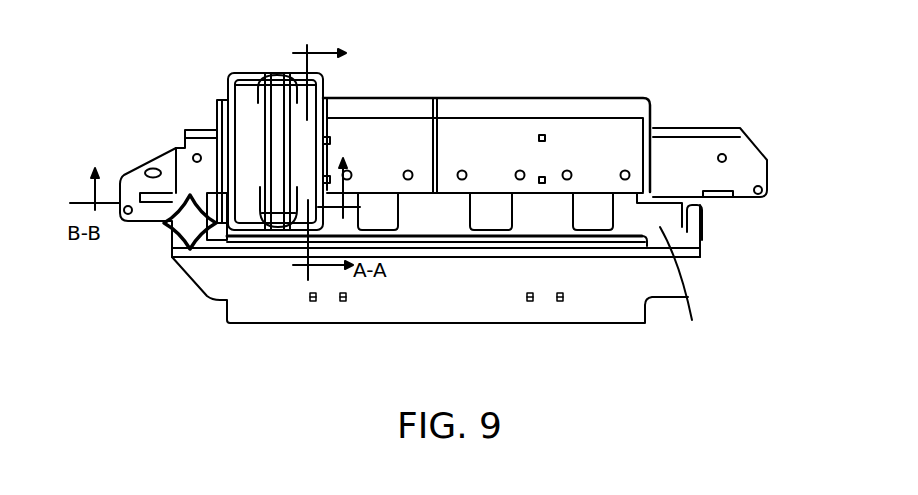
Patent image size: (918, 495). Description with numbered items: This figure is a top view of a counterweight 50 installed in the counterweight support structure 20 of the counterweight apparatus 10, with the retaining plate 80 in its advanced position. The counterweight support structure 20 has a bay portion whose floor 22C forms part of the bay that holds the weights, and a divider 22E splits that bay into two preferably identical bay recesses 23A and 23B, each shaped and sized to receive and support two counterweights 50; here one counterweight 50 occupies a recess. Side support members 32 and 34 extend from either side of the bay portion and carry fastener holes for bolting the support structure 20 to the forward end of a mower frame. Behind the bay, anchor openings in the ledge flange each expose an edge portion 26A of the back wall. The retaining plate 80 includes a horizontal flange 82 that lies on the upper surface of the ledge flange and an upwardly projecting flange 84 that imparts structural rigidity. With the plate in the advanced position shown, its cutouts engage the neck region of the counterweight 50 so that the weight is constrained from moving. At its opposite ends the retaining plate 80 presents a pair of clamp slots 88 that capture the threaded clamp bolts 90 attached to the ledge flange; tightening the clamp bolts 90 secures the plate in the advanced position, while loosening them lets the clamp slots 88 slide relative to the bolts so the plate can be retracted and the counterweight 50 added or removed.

The counterweight apparatus 10 is at (660, 73).
The counterweight support structure 20 is at (208, 312).
The floor 22C is at (603, 155).
The divider 22E is at (437, 140).
The bay recess 23A is at (367, 150).
The bay recess 23B is at (507, 147).
The edge portion of back wall 26A is at (597, 203).
The side support member 32 is at (177, 172).
The side support member 34 is at (683, 163).
The counterweight 50 is at (344, 156).
The retaining plate 80 is at (706, 235).
The horizontal flange 82 is at (667, 297).
The upwardly projecting flange 84 is at (558, 247).
The clamp slot 88 is at (702, 217).
The clamp bolt 90 is at (170, 247).